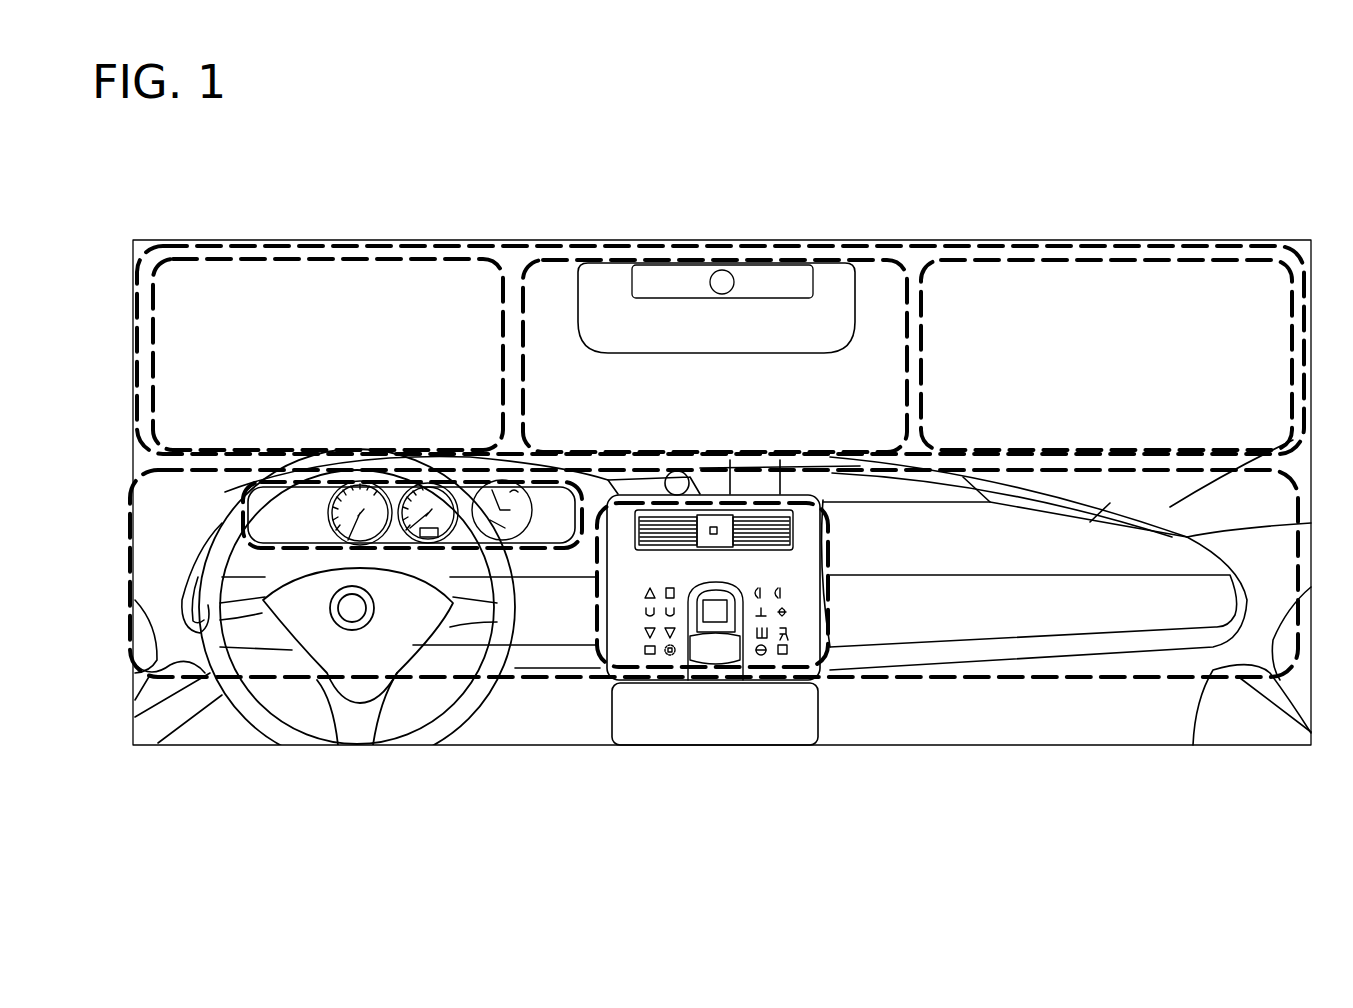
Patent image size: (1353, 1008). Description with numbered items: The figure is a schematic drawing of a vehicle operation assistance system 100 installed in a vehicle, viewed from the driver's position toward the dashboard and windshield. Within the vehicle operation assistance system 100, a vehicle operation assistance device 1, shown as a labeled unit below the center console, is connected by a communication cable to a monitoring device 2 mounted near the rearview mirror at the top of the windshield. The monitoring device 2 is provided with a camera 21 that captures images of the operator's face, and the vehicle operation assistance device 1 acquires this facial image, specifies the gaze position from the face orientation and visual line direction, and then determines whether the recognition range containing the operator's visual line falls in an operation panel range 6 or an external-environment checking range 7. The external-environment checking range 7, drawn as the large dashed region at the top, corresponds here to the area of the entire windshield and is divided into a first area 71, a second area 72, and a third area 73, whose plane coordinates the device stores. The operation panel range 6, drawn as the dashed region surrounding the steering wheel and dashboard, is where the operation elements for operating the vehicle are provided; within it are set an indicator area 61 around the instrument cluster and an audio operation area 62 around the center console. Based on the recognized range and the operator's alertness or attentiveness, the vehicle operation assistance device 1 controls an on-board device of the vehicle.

The vehicle operation assistance system 100 is at (1052, 196).
The external-environment checking range 7 is at (718, 243).
The first area 71 is at (293, 290).
The second area 72 is at (547, 292).
The third area 73 is at (1195, 292).
The monitoring device 2 is at (803, 275).
The camera 21 is at (731, 281).
The operation panel range 6 is at (520, 678).
The indicator area 61 is at (302, 547).
The audio operation area 62 is at (813, 637).
The vehicle operation assistance device 1 is at (703, 745).